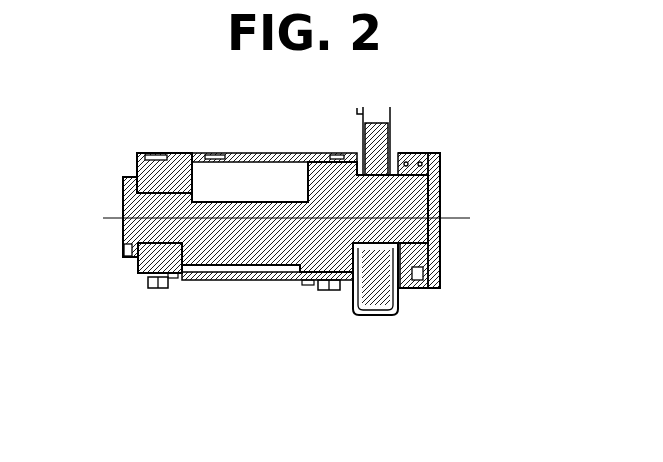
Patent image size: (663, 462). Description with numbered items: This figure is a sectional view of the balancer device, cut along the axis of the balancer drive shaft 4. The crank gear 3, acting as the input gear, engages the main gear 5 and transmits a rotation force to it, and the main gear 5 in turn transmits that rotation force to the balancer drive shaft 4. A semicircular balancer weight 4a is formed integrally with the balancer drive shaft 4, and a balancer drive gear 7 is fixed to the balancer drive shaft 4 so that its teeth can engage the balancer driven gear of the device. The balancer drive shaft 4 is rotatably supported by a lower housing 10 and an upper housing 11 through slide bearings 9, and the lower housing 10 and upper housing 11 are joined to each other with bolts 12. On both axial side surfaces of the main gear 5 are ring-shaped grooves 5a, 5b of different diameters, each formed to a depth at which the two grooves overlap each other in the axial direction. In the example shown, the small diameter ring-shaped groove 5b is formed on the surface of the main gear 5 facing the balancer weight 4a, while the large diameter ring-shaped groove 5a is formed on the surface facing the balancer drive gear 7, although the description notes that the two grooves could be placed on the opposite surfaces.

The crank gear 3 is at (390, 122).
The balancer drive shaft 4 is at (123, 228).
The balancer weight 4a is at (238, 283).
The main gear 5 is at (440, 167).
The large diameter ring-shaped groove 5a is at (412, 289).
The small diameter ring-shaped groove 5b is at (433, 253).
The balancer drive gear 7 is at (440, 193).
The slide bearings 9 is at (173, 283).
The lower housing 10 is at (138, 262).
The upper housing 11 is at (140, 164).
The bolts 12 is at (152, 290).